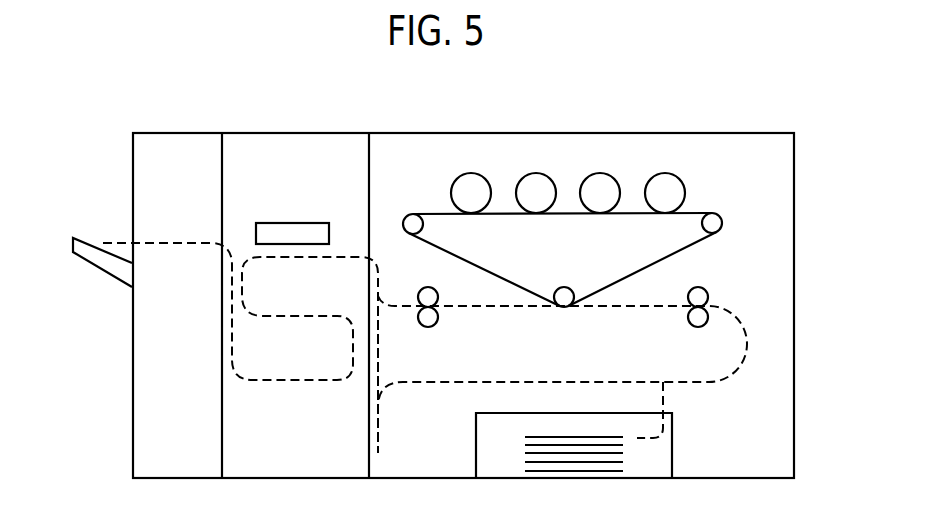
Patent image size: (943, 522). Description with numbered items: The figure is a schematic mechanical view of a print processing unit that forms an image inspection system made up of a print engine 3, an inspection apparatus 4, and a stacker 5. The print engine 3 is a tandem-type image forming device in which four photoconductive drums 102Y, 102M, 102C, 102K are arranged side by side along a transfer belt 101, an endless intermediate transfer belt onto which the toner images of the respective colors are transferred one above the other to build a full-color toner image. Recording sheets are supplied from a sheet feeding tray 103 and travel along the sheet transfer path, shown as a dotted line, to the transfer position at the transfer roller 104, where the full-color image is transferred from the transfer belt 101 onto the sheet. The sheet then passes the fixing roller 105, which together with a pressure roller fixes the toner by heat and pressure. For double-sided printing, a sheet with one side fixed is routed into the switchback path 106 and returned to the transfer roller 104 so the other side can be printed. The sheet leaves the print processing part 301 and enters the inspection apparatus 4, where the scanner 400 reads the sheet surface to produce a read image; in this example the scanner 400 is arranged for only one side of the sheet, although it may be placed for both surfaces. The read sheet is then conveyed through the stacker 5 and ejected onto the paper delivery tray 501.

The print engine 3 is at (776, 133).
The inspection apparatus 4 is at (342, 133).
The stacker 5 is at (192, 133).
The print processing part 301 is at (771, 178).
The paper delivery tray 501 is at (84, 237).
The scanner 400 is at (300, 222).
The transfer belt 101 is at (642, 263).
The photoconductive drum 102K is at (493, 162).
The photoconductive drum 102C is at (557, 162).
The photoconductive drum 102M is at (623, 162).
The photoconductive drum 102Y is at (683, 162).
The transfer roller 104 is at (568, 287).
The fixing roller 105 is at (422, 288).
The switchback path 106 is at (380, 431).
The sheet feeding tray 103 is at (672, 455).